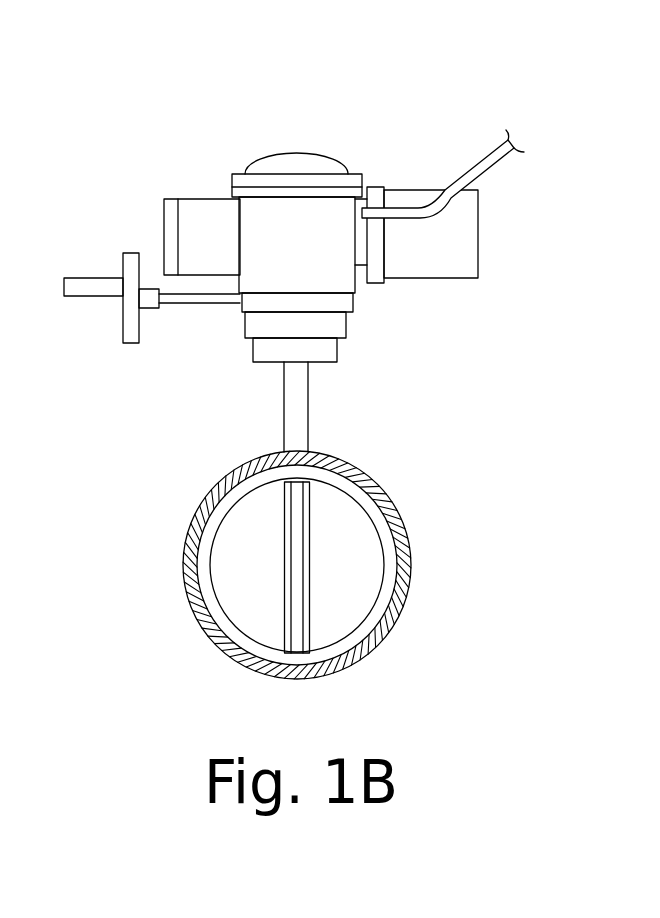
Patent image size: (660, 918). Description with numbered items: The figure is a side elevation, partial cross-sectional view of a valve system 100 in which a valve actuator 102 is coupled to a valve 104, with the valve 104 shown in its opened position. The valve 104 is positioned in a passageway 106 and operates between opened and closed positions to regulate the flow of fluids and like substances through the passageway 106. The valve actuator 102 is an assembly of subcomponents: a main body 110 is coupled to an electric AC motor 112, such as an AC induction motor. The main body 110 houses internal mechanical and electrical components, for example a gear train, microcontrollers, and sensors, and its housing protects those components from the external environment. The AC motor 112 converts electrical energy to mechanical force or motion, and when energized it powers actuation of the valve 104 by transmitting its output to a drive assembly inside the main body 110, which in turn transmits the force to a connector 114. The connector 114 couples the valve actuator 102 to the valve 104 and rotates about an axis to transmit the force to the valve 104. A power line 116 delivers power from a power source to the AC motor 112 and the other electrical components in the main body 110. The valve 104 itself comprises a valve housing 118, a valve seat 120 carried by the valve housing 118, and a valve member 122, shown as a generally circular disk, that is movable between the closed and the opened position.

The valve system 100 is at (188, 104).
The valve actuator 102 is at (568, 125).
The valve 104 is at (195, 480).
The passageway 106 is at (240, 542).
The main body 110 is at (317, 153).
The electric AC motor 112 is at (478, 235).
The connector 114 is at (309, 405).
The power line 116 is at (498, 148).
The valve housing 118 is at (385, 490).
The valve seat 120 is at (383, 530).
The valve member 122 is at (297, 563).